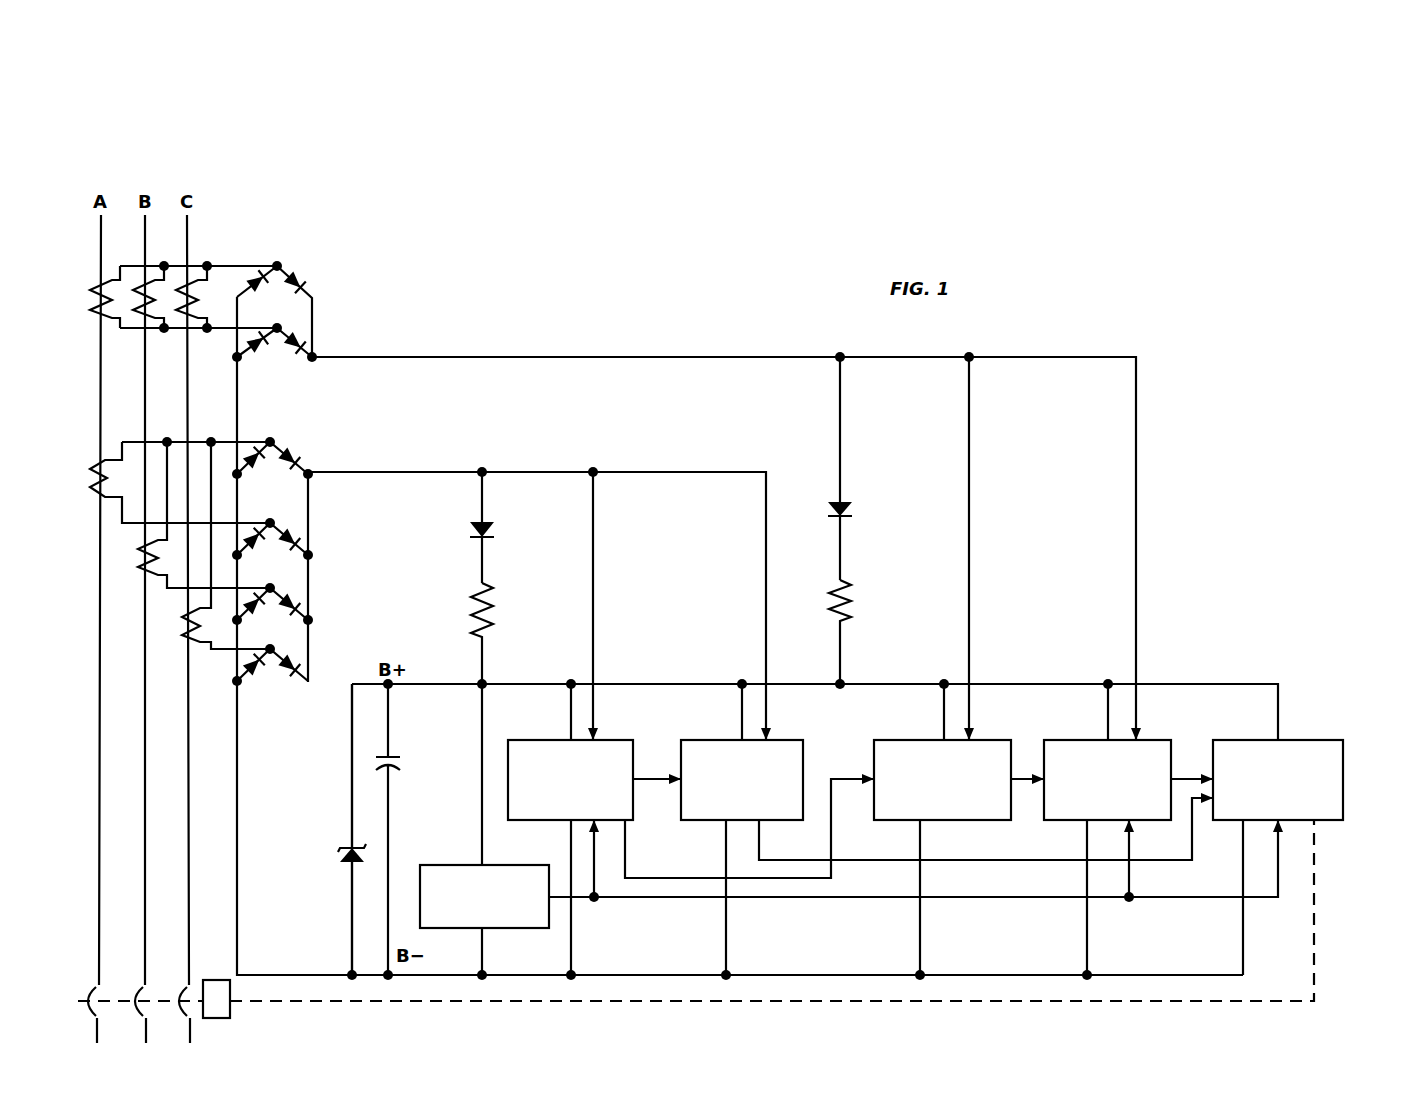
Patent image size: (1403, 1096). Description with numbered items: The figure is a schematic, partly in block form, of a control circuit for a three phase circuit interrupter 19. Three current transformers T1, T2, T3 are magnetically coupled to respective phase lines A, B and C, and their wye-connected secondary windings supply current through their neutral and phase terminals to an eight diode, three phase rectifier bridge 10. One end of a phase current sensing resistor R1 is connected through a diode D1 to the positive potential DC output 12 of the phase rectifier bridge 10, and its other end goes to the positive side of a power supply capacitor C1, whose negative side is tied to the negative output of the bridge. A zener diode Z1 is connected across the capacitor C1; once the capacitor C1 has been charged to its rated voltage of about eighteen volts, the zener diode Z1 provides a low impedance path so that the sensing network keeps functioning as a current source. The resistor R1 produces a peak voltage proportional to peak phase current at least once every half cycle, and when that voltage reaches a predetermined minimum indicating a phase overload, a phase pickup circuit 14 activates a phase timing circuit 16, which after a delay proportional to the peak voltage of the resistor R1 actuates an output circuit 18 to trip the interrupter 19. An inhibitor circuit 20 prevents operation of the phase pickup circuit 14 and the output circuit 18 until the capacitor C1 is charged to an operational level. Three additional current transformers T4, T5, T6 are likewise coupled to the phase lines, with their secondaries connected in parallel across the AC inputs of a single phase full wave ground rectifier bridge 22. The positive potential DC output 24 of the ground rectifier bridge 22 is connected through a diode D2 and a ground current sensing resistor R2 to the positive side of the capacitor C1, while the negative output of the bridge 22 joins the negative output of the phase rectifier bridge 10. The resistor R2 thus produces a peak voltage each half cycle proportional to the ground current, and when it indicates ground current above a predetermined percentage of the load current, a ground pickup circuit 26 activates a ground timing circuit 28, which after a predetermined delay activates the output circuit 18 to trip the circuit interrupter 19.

The phase rectifier bridge 10 is at (284, 714).
The positive potential DC output 12 is at (539, 594).
The phase pickup circuit 14 is at (611, 740).
The phase timing circuit 16 is at (782, 740).
The output circuit 18 is at (1306, 740).
The circuit interrupter 19 is at (159, 968).
The inhibitor circuit 20 is at (505, 865).
The ground rectifier bridge 22 is at (284, 387).
The positive potential DC output 24 is at (726, 536).
The ground pickup circuit 26 is at (988, 740).
The ground timing circuit 28 is at (1150, 740).
The current transformer T1 is at (180, 482).
The current transformer T2 is at (204, 515).
The current transformer T3 is at (226, 545).
The current transformer T4 is at (112, 310).
The current transformer T5 is at (155, 310).
The current transformer T6 is at (198, 310).
The diode D1 is at (497, 527).
The diode D2 is at (855, 468).
The phase current sensing resistor R1 is at (497, 633).
The ground current sensing resistor R2 is at (855, 632).
The power supply capacitor C1 is at (403, 829).
The zener diode Z1 is at (341, 829).